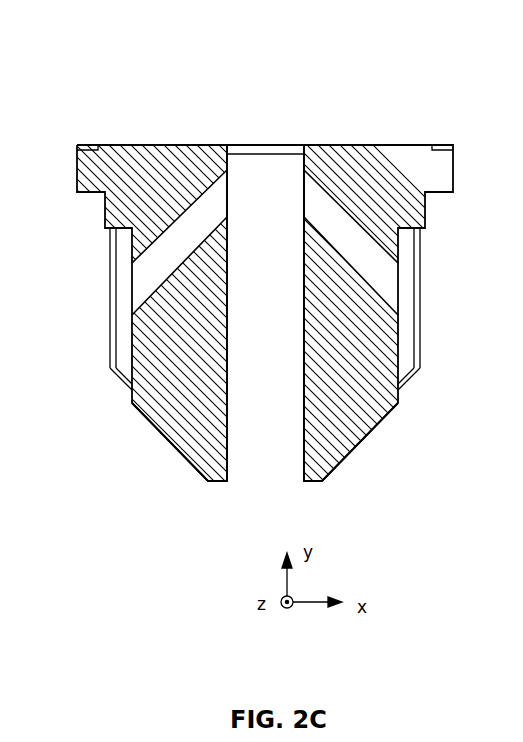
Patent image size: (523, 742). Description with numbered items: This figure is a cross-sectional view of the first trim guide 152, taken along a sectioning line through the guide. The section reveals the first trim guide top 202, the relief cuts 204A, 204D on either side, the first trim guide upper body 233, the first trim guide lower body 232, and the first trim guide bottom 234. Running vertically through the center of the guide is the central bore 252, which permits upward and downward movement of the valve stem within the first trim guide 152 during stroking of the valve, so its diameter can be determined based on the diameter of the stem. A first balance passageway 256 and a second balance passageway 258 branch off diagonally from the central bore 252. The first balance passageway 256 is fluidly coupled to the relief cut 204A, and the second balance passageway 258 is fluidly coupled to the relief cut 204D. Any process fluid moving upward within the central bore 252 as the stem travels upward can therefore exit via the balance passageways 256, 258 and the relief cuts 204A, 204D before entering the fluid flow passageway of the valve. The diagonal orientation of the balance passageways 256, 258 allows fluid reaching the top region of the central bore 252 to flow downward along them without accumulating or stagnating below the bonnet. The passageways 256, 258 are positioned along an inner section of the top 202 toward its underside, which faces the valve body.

The first trim guide 152 is at (98, 73).
The first trim guide top 202 is at (398, 145).
The central bore 252 is at (266, 205).
The first balance passageway 256 is at (173, 256).
The second balance passageway 258 is at (377, 262).
The relief cut 204A is at (120, 333).
The relief cut 204D is at (405, 330).
The first trim guide upper body 233 is at (421, 349).
The first trim guide lower body 232 is at (370, 432).
The first trim guide bottom 234 is at (280, 482).